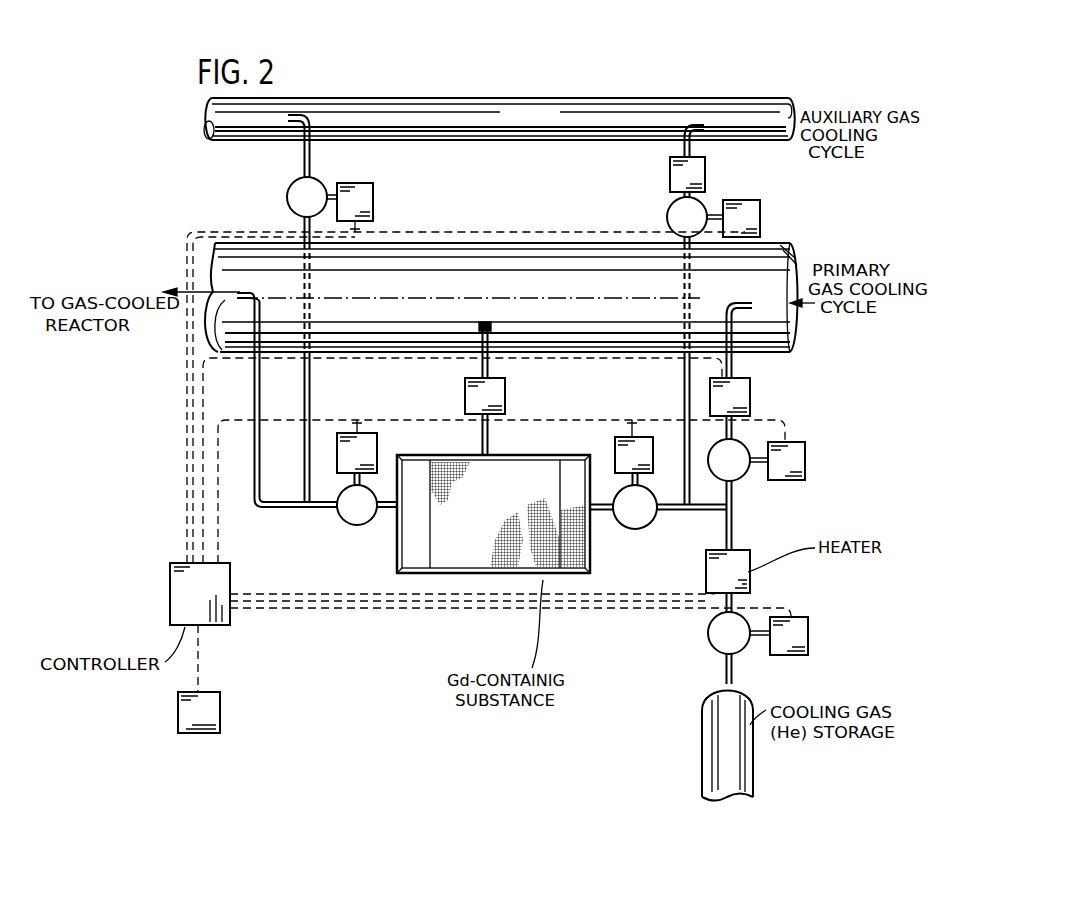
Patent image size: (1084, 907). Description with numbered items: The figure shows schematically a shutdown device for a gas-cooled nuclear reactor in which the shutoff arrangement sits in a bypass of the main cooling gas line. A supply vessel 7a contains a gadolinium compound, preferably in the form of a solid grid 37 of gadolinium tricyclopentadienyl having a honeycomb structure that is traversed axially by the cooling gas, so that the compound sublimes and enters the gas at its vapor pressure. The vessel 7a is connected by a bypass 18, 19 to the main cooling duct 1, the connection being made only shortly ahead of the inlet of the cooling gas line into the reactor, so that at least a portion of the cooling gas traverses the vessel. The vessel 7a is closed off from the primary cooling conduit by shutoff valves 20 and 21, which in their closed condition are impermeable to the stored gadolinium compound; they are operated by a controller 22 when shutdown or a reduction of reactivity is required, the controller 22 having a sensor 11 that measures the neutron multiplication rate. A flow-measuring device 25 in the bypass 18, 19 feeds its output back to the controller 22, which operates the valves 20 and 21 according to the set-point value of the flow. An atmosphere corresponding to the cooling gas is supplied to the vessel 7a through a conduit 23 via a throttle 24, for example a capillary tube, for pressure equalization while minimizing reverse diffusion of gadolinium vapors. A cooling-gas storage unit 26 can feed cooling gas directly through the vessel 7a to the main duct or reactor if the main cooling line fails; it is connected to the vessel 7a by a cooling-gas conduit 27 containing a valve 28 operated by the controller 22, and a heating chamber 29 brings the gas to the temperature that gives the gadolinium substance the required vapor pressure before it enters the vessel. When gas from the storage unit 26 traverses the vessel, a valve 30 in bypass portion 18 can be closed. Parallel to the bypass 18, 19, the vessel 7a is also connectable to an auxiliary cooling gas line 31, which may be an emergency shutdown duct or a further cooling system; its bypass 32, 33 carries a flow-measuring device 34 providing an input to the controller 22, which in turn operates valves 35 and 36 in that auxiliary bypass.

The main cooling duct 1 is at (455, 243).
The supply vessel 7a is at (410, 577).
The sensor 11 is at (207, 715).
The bypass portion 18 is at (732, 328).
The bypass portion 19 is at (280, 507).
The shutoff valve 20 is at (625, 445).
The shutoff valve 21 is at (358, 520).
The controller 22 is at (185, 592).
The conduit 23 is at (488, 330).
The throttle 24 is at (497, 393).
The flow-measuring device 25 is at (742, 400).
The cooling-gas storage unit 26 is at (720, 735).
The cooling-gas conduit 27 is at (724, 668).
The valve 28 is at (790, 628).
The heating chamber 29 is at (745, 565).
The valve 30 is at (790, 455).
The auxiliary cooling gas line 31 is at (438, 120).
The bypass portion 32 is at (700, 127).
The bypass portion 33 is at (312, 161).
The flow-measuring device 34 is at (707, 176).
The valve 35 is at (670, 218).
The valve 36 is at (292, 205).
The solid grid 37 is at (480, 578).